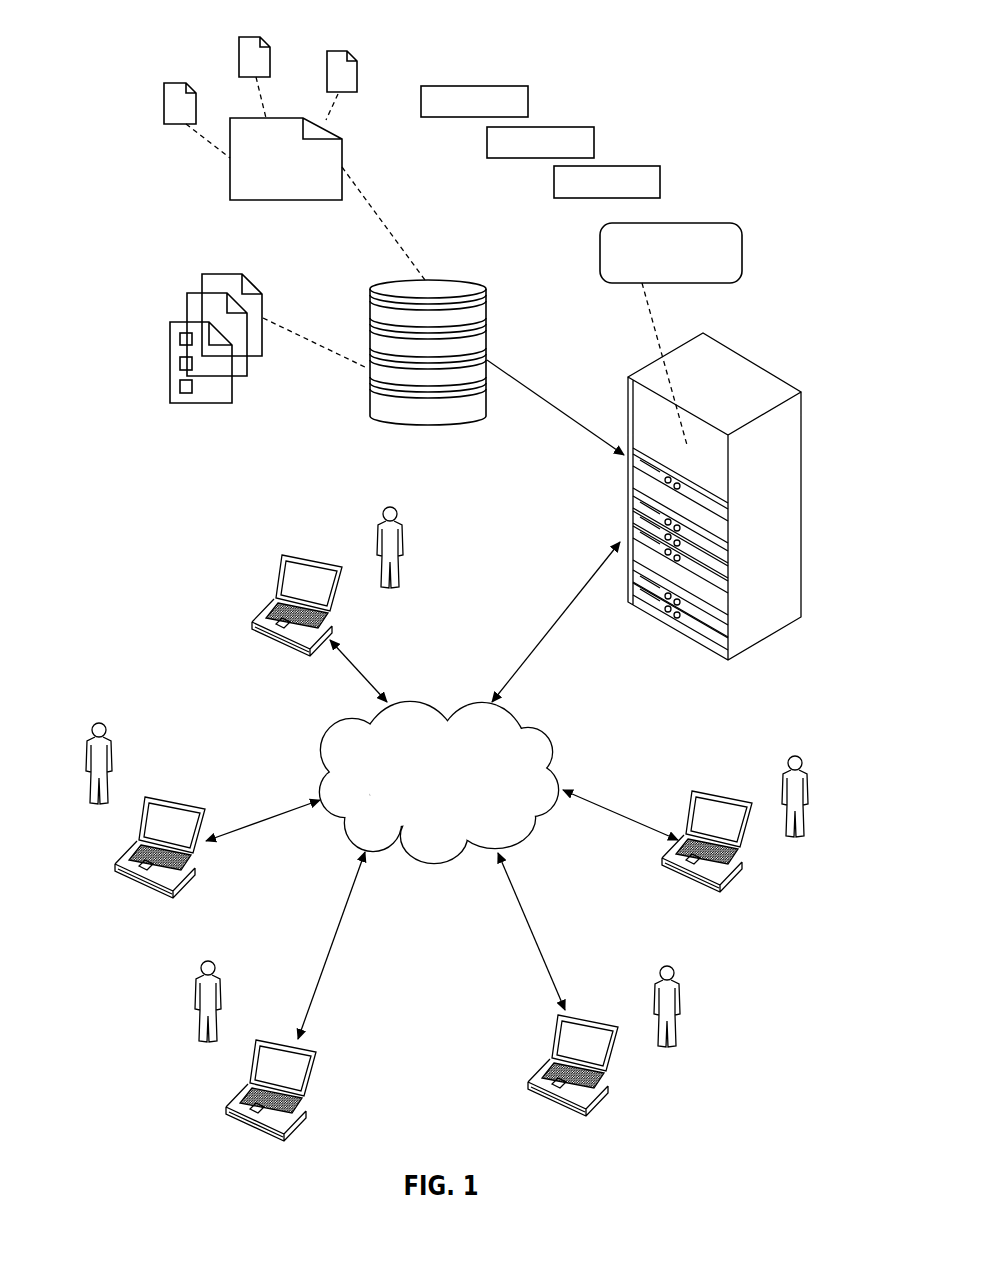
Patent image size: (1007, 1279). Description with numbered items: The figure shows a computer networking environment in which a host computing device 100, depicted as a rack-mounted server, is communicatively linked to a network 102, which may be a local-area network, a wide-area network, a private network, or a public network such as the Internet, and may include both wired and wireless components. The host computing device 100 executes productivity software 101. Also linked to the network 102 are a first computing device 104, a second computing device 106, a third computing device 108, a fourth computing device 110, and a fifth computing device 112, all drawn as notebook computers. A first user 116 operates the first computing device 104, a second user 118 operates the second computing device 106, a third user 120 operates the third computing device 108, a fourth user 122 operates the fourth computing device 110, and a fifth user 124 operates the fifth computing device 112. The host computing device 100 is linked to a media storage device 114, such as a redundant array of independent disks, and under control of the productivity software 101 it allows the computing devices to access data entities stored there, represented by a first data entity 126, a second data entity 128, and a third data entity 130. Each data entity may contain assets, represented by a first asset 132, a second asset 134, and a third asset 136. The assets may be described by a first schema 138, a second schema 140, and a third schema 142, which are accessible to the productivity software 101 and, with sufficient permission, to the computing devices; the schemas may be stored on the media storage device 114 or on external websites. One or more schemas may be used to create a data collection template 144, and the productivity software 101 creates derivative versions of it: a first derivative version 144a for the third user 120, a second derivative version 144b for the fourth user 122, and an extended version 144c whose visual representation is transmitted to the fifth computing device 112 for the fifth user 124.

The host computing device 100 is at (710, 460).
The productivity software 101 is at (680, 223).
The network 102 is at (326, 744).
The first computing device 104 is at (283, 582).
The second computing device 106 is at (115, 864).
The third computing device 108 is at (226, 1107).
The fourth computing device 110 is at (557, 1037).
The fifth computing device 112 is at (690, 800).
The media storage device 114 is at (455, 281).
The first user 116 is at (386, 507).
The second user 118 is at (96, 722).
The third user 120 is at (204, 961).
The fourth user 122 is at (663, 962).
The fifth user 124 is at (792, 752).
The first data entity 126 is at (182, 322).
The second data entity 128 is at (200, 293).
The third data entity 130 is at (225, 274).
The first asset 132 is at (180, 339).
The second asset 134 is at (180, 363).
The third asset 136 is at (180, 386).
The first schema 138 is at (475, 86).
The second schema 140 is at (540, 127).
The third schema 142 is at (606, 166).
The data collection template 144 is at (228, 178).
The first derivative version 144a is at (170, 82).
The second derivative version 144b is at (243, 36).
The extended version 144c is at (340, 52).